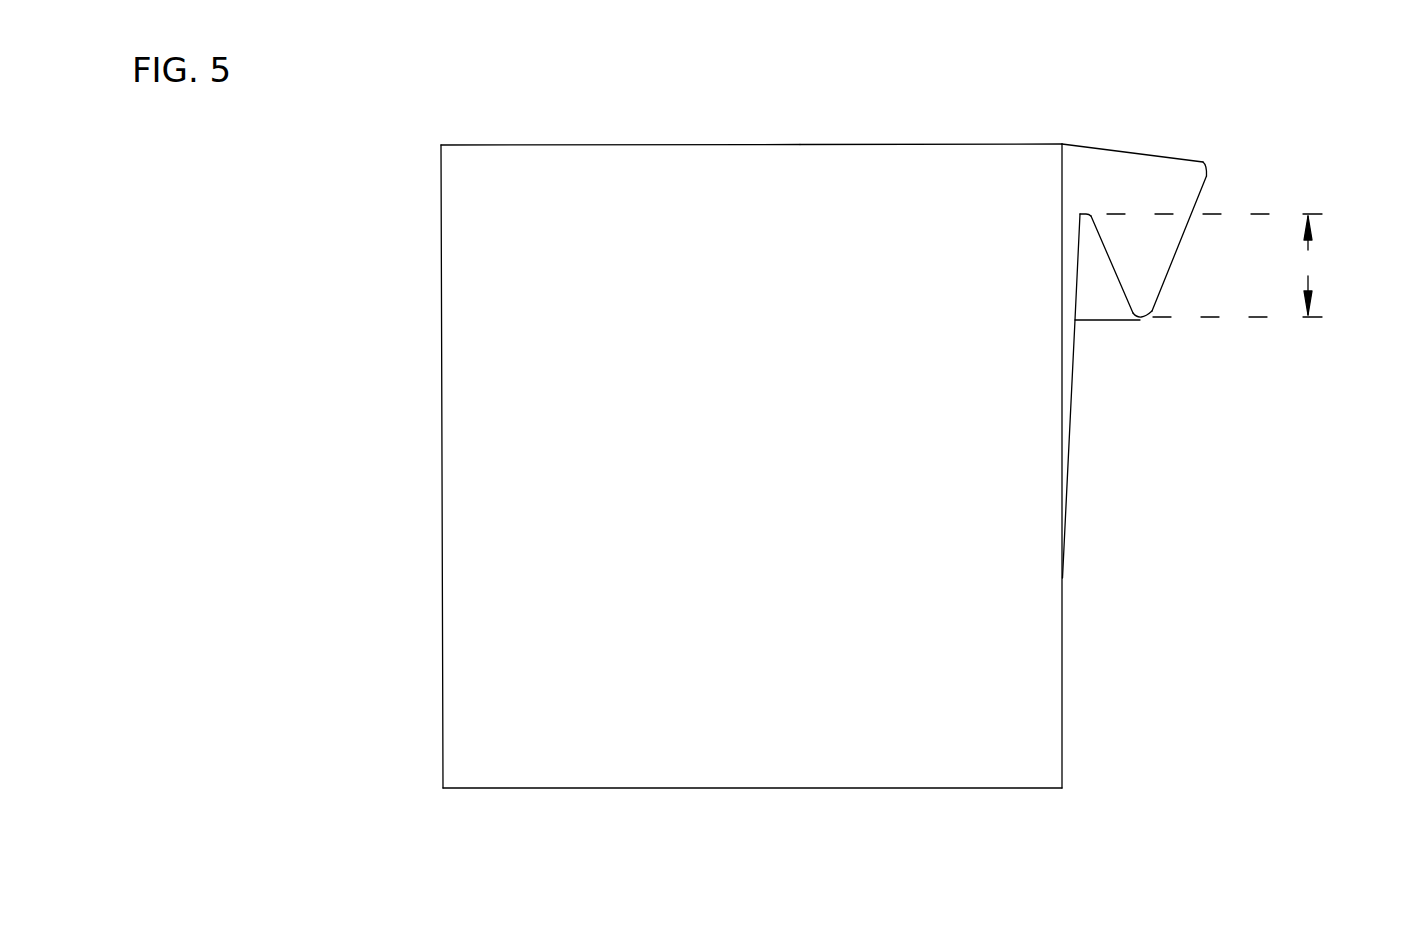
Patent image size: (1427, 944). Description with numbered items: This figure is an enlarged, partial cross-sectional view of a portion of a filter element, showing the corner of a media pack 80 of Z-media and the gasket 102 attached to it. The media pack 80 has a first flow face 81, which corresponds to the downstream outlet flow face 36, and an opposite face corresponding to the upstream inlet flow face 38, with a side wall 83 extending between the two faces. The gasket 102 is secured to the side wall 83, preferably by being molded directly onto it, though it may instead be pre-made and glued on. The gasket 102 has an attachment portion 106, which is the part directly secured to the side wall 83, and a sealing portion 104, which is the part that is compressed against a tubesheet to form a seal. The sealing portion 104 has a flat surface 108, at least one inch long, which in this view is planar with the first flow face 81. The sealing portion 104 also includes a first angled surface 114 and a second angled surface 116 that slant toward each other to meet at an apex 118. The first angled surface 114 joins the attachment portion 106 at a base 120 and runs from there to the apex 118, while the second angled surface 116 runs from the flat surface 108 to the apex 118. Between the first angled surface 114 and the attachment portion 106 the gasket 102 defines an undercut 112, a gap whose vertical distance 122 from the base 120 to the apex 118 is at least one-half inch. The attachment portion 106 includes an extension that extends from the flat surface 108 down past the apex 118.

The downstream (outlet) flow face 36 is at (860, 144).
The upstream (inlet) flow face 38 is at (1007, 788).
The media pack 80 is at (1047, 698).
The first flow face 81 is at (777, 144).
The side wall 83 is at (1063, 643).
The gasket 102 is at (1236, 326).
The sealing portion 104 is at (1185, 177).
The attachment portion 106 is at (1069, 477).
The flat surface 108 is at (1133, 153).
The undercut 112 is at (1099, 288).
The first angled surface 114 is at (1123, 293).
The second angled surface 116 is at (1180, 248).
The apex 118 is at (1140, 318).
The base 120 is at (1090, 214).
The vertical distance 122 is at (1220, 265).